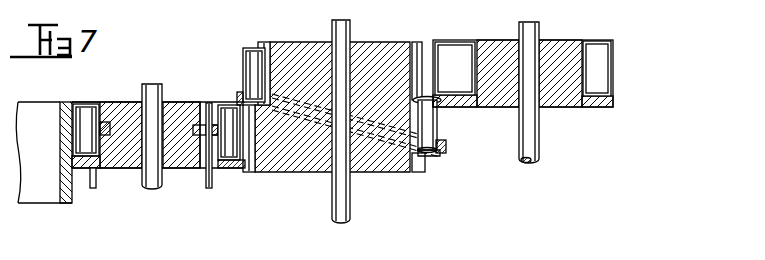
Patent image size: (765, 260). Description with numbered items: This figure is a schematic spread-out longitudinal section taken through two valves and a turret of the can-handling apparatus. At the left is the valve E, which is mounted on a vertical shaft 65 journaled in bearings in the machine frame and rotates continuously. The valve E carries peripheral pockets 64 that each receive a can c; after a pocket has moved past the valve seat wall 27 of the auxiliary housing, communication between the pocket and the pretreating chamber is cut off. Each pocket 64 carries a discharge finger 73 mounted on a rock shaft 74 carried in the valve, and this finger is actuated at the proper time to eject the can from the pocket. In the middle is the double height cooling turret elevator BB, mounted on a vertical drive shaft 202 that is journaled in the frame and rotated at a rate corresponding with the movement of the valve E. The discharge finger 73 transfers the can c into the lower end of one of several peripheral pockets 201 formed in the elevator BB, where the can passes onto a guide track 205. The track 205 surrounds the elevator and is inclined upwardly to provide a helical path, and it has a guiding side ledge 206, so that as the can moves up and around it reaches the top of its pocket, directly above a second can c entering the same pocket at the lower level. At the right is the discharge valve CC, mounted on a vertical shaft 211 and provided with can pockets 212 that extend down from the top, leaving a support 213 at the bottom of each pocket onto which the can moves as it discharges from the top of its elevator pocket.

The circular wall 27 is at (62, 194).
The bearing a is at (88, 112).
The pocket 64 is at (98, 102).
The vertical shaft 65 is at (151, 88).
The discharge finger 73 is at (105, 124).
The valve E is at (175, 104).
The rock shaft 74 is at (93, 189).
The can c is at (254, 60).
The guide track 205 is at (252, 170).
The peripheral pocket 201 is at (256, 44).
The guiding side ledge 206 is at (238, 92).
The vertical drive shaft 202 is at (334, 24).
The cooling turret elevator BB is at (368, 52).
The can pocket 212 is at (470, 45).
The vertical shaft 211 is at (537, 30).
The discharge valve CC is at (566, 103).
The support 213 is at (606, 103).